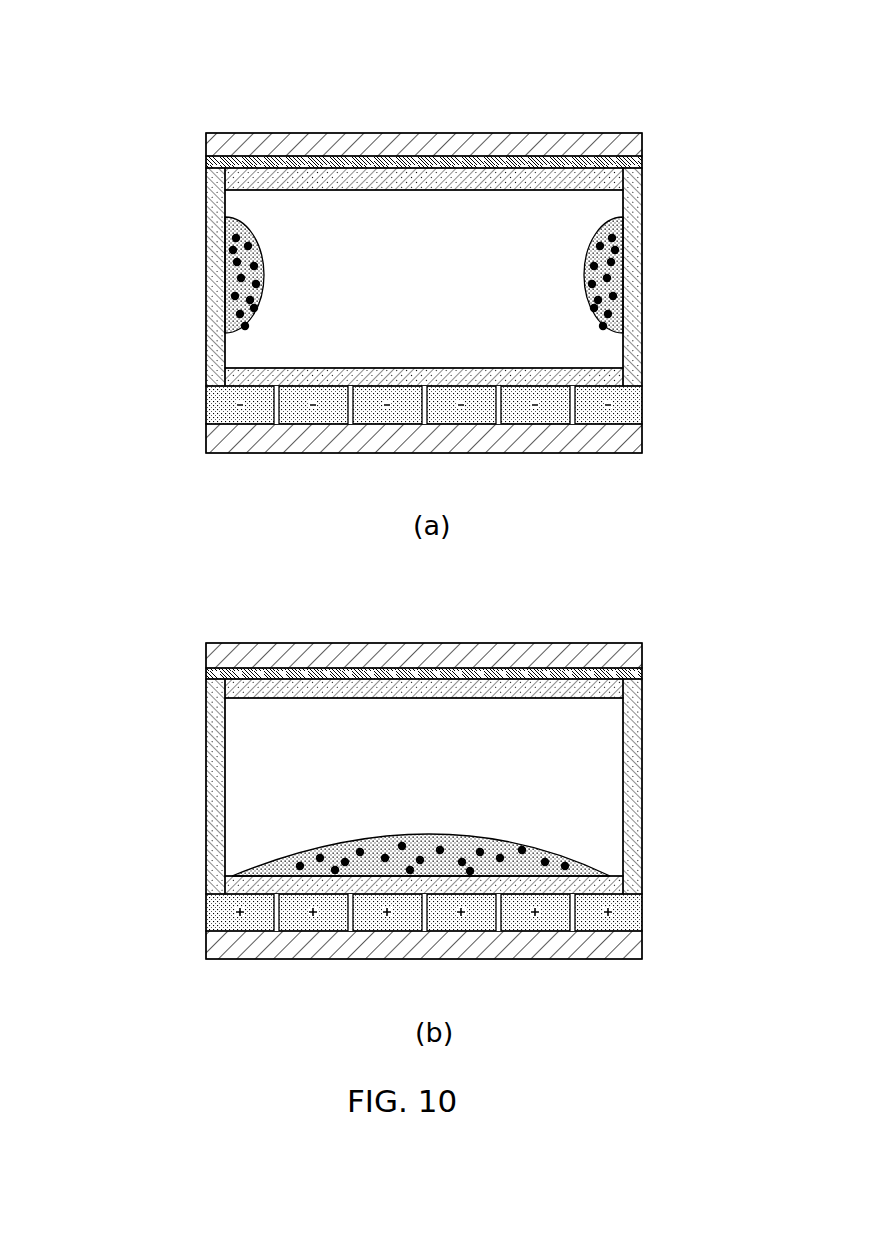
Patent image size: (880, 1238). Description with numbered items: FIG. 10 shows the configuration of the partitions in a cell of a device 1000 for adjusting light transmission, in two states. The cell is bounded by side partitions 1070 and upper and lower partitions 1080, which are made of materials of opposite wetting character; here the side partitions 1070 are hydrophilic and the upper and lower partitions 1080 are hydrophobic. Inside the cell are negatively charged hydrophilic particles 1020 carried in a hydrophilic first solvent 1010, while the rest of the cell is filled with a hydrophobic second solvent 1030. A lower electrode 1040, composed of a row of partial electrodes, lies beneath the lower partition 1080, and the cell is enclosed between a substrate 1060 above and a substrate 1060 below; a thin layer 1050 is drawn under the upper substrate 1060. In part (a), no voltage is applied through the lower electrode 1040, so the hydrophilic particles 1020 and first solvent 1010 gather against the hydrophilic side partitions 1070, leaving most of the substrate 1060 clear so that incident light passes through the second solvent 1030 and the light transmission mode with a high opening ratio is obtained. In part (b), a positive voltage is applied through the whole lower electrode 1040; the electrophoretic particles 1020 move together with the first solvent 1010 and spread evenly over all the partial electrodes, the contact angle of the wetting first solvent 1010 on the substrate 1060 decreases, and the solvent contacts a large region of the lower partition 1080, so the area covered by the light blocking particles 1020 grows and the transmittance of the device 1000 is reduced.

The device for adjusting light transmission 1000 is at (147, 28).
The first solvent 1010 is at (236, 245).
The particles 1020 is at (236, 290).
The second solvent 1030 is at (300, 330).
The lower electrode 1040 is at (214, 405).
The common electrode 1050 is at (206, 163).
The substrate 1060 is at (206, 152).
The side partitions 1070 is at (206, 206).
The upper and lower partitions 1080 is at (425, 175).